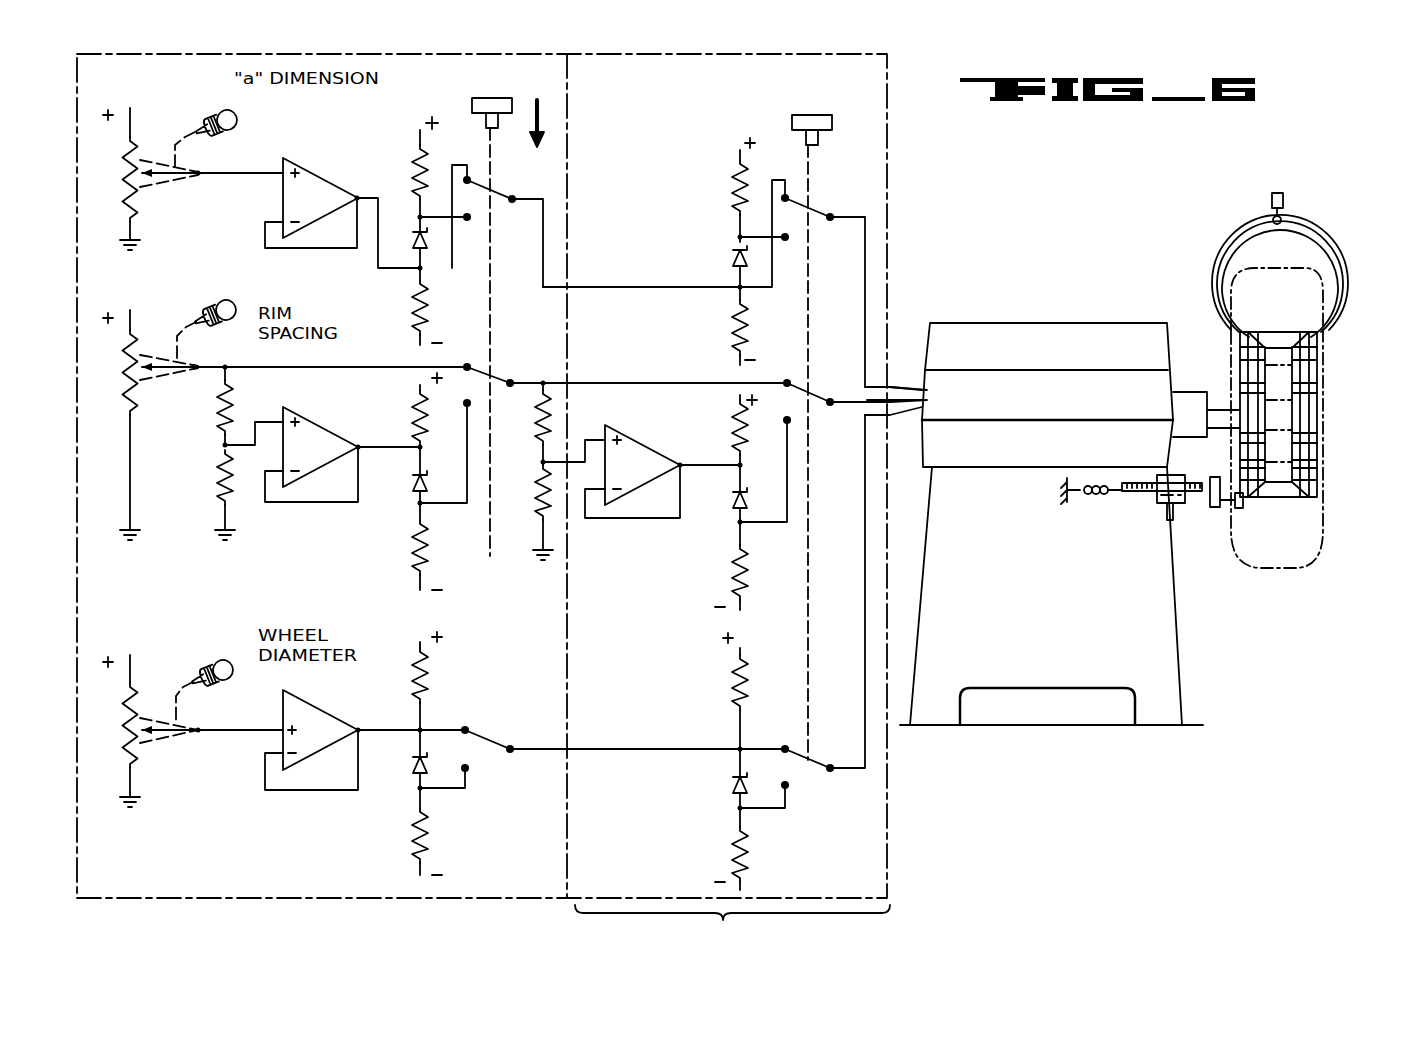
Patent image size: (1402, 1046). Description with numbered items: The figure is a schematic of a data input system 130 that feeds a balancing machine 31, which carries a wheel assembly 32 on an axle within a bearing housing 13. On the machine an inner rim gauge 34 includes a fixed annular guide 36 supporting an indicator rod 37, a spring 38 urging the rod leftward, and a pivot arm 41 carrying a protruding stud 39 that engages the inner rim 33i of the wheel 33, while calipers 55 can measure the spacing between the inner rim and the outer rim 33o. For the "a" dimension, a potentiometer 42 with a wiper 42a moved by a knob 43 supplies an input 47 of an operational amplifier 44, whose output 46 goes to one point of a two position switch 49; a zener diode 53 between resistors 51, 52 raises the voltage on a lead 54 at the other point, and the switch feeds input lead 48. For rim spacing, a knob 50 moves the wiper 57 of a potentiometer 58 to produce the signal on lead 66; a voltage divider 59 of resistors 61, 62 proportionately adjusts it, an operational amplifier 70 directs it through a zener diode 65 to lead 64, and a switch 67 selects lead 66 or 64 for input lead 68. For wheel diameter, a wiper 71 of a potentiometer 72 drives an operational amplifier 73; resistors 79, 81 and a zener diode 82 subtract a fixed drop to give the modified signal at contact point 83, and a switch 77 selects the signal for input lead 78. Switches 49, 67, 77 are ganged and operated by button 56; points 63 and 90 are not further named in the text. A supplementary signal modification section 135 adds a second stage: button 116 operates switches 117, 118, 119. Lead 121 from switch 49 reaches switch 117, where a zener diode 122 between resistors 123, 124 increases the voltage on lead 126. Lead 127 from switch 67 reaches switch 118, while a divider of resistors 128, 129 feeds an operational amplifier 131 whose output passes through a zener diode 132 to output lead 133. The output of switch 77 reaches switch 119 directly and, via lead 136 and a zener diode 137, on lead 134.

The data input system 130 is at (140, 45).
The potentiometer 42 is at (143, 202).
The wiper 42a is at (167, 168).
The knob 43 is at (235, 113).
The operational amplifier 44 is at (311, 203).
The output 46 is at (358, 196).
The input 47 is at (242, 172).
The two position switch 49 is at (500, 190).
The knob 50 is at (231, 299).
The resistor 51 is at (418, 150).
The resistor 52 is at (410, 300).
The zener diode 53 is at (410, 245).
The lead 54 is at (454, 262).
The control element or button 56 is at (472, 103).
The lead 121 is at (543, 250).
The potentiometer 58 is at (157, 314).
The wiper 57 is at (164, 372).
The lead 66 is at (215, 364).
The resistor 61 is at (232, 416).
The resistor 62 is at (218, 498).
The junction conductor 63 is at (223, 445).
The voltage divider 59 is at (178, 487).
The operational amplifier 70 is at (311, 454).
The zener diode 65 is at (410, 490).
The lead 64 is at (455, 503).
The switch 67 is at (510, 376).
The resistor 128 is at (550, 395).
The resistor 129 is at (540, 547).
The operational amplifier 131 is at (540, 462).
The lead 127 is at (625, 380).
The output lead 133 is at (782, 470).
The zener diode 132 is at (733, 500).
The switch 118 is at (815, 380).
The resistor 124 is at (735, 210).
The lead 126 is at (737, 232).
The zener diode 122 is at (730, 257).
The resistor 123 is at (735, 328).
The switch 117 is at (820, 210).
The control element or button 116 is at (808, 112).
The potentiometer 72 is at (165, 652).
The wiper 71 is at (166, 735).
The conductor 90 is at (125, 760).
The operational amplifier 73 is at (278, 740).
The resistor 79 is at (425, 680).
The zener diode 82 is at (410, 771).
The resistor 81 is at (425, 820).
The contact point 83 is at (470, 772).
The switch 77 is at (500, 745).
The lead 136 is at (625, 748).
The zener diode 137 is at (730, 788).
The lead 134 is at (765, 815).
The switch 119 is at (815, 758).
The supplementary signal modification section 135 is at (732, 927).
The balancing machine 31 is at (1115, 319).
The input lead 48 is at (910, 387).
The input lead 68 is at (943, 397).
The input lead 78 is at (937, 436).
The bearing housing 13 is at (1217, 394).
The inner rim 33i is at (1174, 434).
The wheel assembly 32 is at (1337, 436).
The calipers 55 is at (1215, 290).
The inner rim gauge 34 is at (1129, 535).
The spring 38 is at (1103, 498).
The indicator rod 37 is at (1195, 505).
The fixed annular guide 36 is at (1175, 522).
The pivot arm 41 is at (1230, 463).
The protruding stud 39 is at (1245, 505).
The wheel 33 is at (1283, 500).
The outer rim 33o is at (1318, 500).